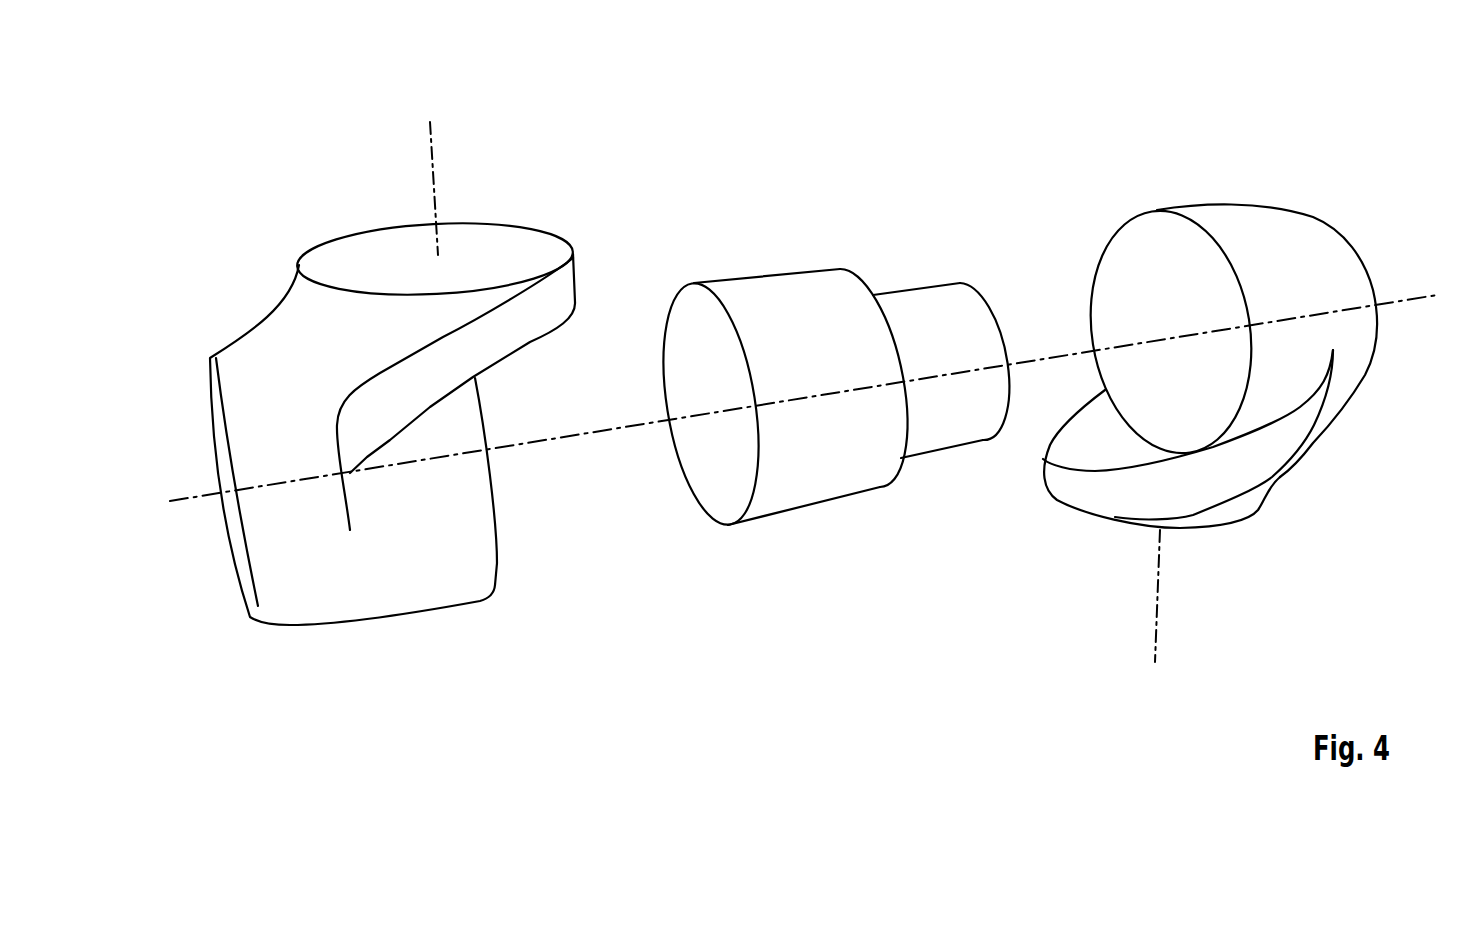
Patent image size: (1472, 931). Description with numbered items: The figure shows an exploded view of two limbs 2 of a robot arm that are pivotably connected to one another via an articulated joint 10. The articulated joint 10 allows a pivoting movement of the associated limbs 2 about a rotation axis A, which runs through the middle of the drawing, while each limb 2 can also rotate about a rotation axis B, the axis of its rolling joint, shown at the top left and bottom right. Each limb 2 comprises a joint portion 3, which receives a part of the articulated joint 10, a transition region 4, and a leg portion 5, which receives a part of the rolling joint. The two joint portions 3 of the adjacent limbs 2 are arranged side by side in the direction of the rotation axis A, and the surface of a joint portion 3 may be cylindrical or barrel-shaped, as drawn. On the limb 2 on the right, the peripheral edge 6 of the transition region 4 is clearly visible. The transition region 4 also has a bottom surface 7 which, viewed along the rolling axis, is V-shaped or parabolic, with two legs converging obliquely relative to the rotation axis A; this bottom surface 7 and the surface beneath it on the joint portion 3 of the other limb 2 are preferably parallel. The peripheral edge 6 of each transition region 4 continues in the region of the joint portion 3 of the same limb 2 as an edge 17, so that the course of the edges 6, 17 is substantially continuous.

The limb 2 is at (302, 337).
The joint portion 3 is at (290, 560).
The transition region 4 is at (425, 326).
The leg portion 5 is at (350, 255).
The peripheral edge 6 is at (547, 332).
The bottom surface 7 is at (1103, 447).
The articulated joint 10 is at (817, 268).
The edge 17 is at (405, 430).
The rotation axis A is at (168, 510).
The rotation axis B is at (430, 143).